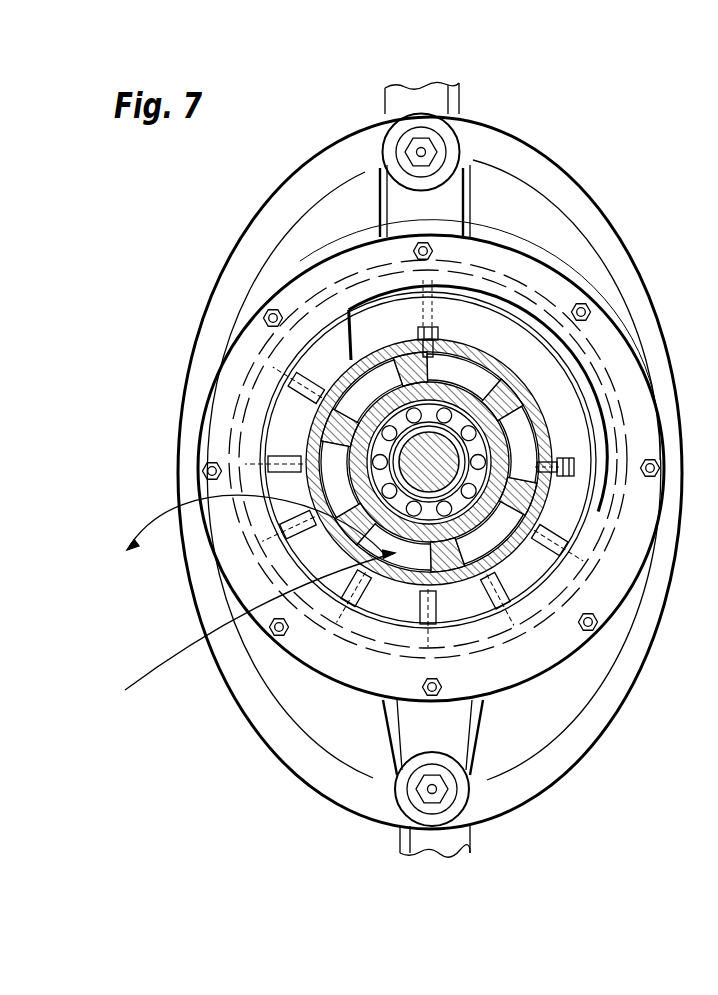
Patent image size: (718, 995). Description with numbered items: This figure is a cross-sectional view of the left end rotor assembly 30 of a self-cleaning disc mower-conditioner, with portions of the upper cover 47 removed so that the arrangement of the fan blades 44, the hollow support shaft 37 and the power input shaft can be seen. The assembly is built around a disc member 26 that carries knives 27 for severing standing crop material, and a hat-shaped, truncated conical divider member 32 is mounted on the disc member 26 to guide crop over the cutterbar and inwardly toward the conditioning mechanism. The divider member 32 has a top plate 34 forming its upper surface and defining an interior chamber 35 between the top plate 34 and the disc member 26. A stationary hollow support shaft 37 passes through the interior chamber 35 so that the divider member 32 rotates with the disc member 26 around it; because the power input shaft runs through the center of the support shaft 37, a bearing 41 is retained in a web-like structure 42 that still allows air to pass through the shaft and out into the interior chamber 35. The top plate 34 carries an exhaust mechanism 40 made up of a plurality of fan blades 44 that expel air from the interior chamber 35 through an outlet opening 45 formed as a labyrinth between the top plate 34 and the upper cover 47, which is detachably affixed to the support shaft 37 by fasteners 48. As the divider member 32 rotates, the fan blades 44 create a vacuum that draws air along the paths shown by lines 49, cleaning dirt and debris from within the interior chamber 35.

The disc member 26 is at (503, 148).
The knives 27 is at (461, 99).
The left end rotor assembly 30 is at (212, 163).
The truncated conical divider member 32 is at (342, 295).
The top plate 34 is at (527, 264).
The interior chamber 35 is at (297, 420).
The support shaft 37 is at (327, 333).
The exhaust mechanism 40 is at (404, 610).
The bearing 41 is at (522, 324).
The web-like structure 42 is at (333, 310).
The fan blades 44 is at (338, 358).
The outlet opening 45 is at (457, 618).
The upper cover 47 is at (372, 325).
The fasteners 48 is at (430, 324).
The air flow path lines 49 is at (176, 514).